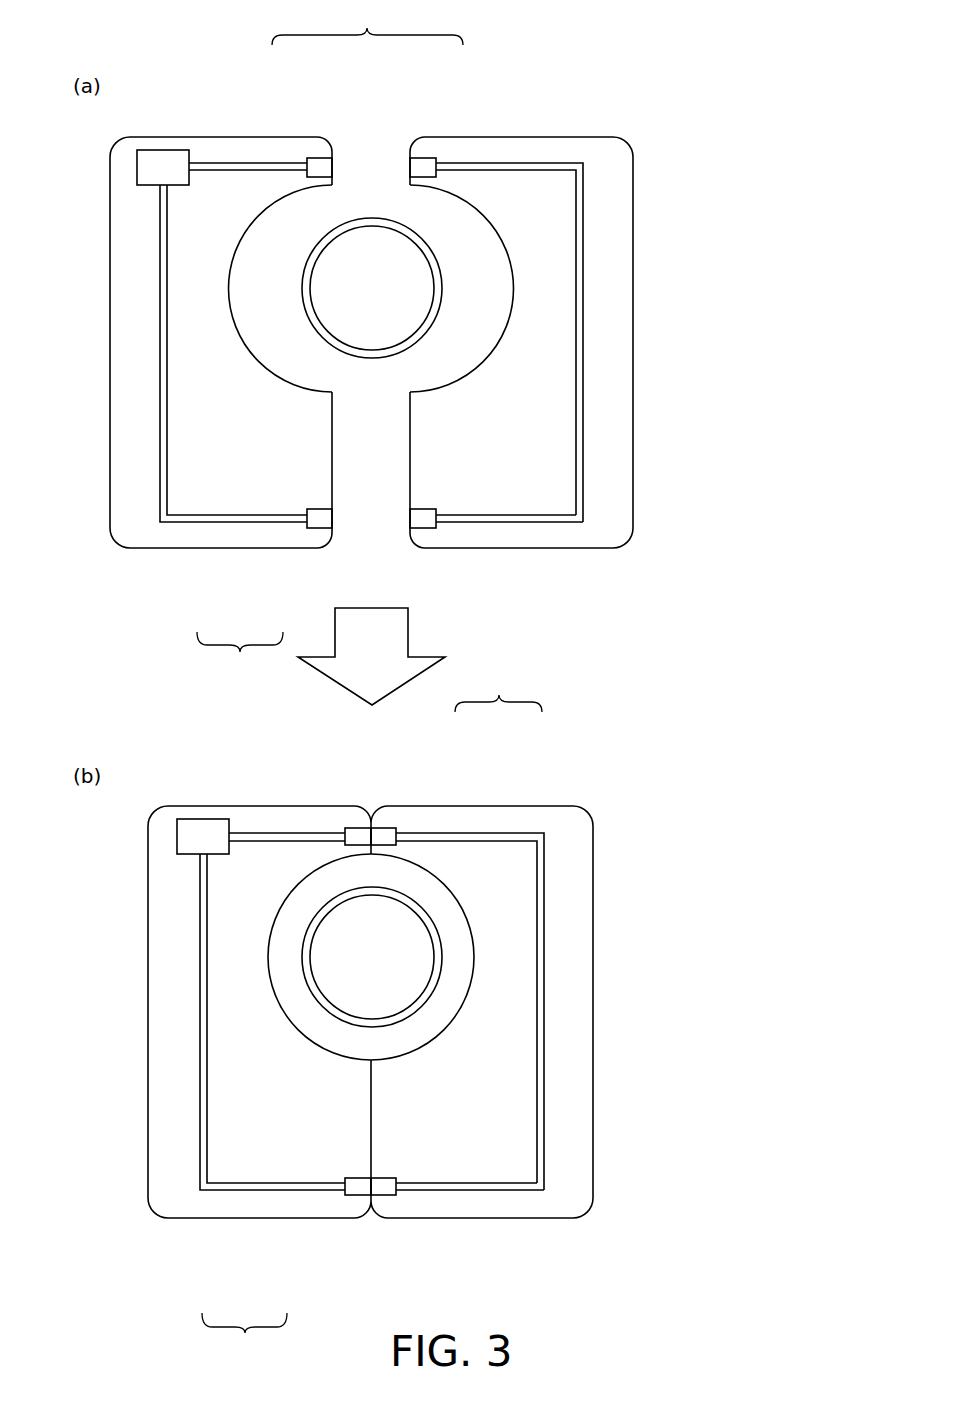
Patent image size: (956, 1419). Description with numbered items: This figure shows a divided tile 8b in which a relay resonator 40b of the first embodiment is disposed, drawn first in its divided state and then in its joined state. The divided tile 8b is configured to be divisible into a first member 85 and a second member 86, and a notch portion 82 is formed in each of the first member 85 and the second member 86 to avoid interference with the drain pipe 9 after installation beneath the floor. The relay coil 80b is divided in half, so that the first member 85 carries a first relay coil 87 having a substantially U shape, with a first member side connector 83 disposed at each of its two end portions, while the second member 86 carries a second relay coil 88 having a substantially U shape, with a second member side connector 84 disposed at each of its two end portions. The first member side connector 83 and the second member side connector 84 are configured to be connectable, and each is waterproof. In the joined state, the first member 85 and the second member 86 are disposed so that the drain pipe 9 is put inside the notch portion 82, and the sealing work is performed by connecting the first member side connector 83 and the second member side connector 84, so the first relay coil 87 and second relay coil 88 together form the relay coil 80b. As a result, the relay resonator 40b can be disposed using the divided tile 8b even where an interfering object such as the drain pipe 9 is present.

The divided tile 8b is at (407, 357).
The first member 85 is at (287, 160).
The second member 86 is at (459, 160).
The first member side connector 83 is at (339, 158).
The second member side connector 84 is at (402, 158).
The relay resonator 40b is at (594, 156).
The notch portion 82 is at (238, 240).
The drain pipe 9 is at (437, 318).
The first relay coil 87 is at (287, 524).
The second relay coil 88 is at (457, 524).
The relay coil 80b is at (242, 997).